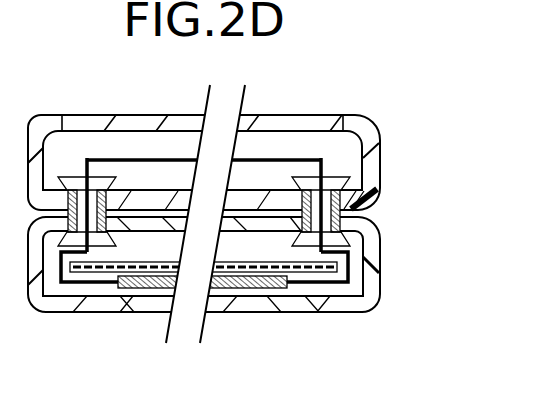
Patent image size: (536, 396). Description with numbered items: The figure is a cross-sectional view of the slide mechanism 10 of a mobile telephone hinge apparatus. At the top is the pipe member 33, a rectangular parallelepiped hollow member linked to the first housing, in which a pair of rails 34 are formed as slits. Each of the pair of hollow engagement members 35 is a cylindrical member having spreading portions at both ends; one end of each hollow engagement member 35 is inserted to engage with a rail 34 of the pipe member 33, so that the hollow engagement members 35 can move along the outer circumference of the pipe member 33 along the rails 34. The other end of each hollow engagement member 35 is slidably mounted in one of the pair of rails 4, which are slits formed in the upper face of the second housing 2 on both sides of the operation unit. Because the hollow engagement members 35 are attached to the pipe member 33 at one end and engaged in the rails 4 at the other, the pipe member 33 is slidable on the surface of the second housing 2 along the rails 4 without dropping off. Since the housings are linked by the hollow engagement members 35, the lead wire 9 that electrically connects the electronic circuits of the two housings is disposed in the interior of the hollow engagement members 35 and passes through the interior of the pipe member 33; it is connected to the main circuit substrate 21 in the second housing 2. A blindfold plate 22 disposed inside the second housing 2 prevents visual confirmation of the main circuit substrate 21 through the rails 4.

The second housing 2 is at (357, 313).
The rails 4 is at (343, 227).
The lead wire 9 is at (107, 158).
The slide mechanism 10 is at (258, 176).
The main circuit substrate 21 is at (134, 284).
The blindfold plate 22 is at (90, 270).
The pipe member 33 is at (380, 152).
The rails 34 is at (328, 116).
The hollow engagement members 35 is at (361, 190).